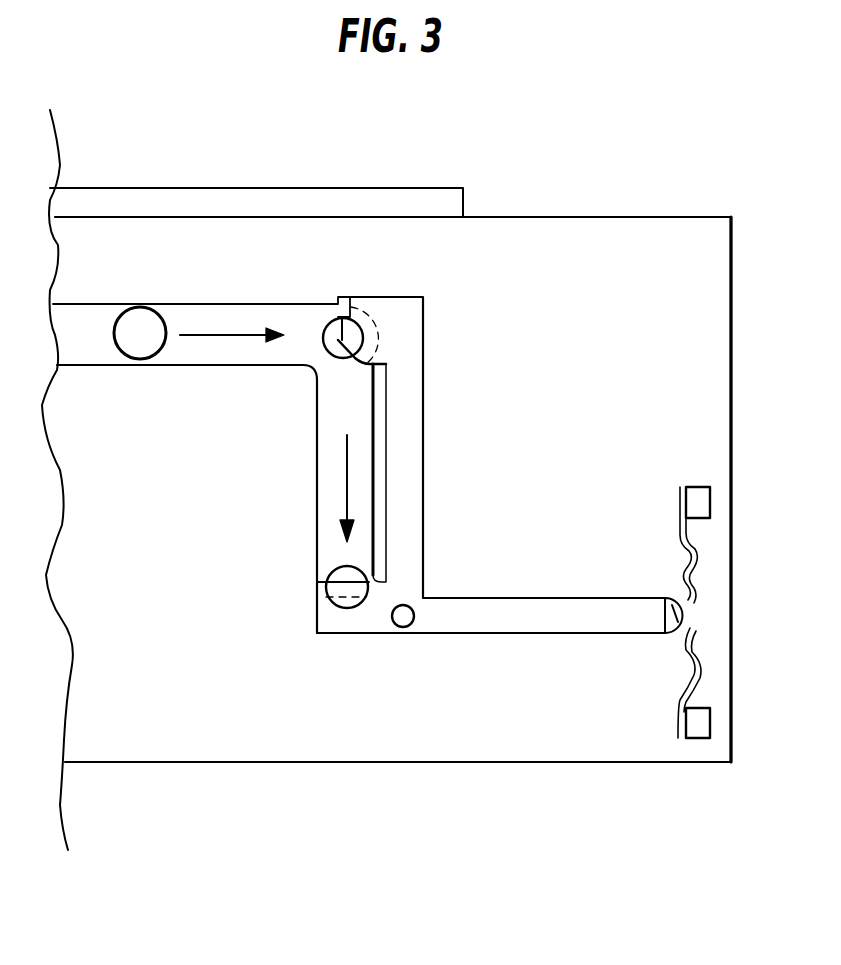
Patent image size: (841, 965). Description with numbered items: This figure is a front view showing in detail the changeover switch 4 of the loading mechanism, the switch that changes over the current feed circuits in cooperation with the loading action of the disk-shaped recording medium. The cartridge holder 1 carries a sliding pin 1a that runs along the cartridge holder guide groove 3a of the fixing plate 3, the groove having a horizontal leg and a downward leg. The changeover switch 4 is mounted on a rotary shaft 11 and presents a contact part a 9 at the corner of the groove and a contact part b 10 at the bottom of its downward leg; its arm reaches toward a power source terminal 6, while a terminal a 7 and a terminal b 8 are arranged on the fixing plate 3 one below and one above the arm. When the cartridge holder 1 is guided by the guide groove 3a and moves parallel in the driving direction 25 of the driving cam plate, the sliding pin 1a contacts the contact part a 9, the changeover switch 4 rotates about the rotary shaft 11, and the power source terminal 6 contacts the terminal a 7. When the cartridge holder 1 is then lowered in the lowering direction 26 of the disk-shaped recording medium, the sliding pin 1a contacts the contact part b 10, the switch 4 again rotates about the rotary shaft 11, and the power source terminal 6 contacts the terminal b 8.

The cartridge holder 1 is at (378, 200).
The sliding pin 1a is at (135, 340).
The fixing plate 3 is at (505, 252).
The cartridge holder guide groove 3a is at (330, 518).
The changeover switch 4 is at (462, 620).
The power source terminal 6 is at (672, 627).
The terminal a 7 is at (683, 727).
The terminal b 8 is at (686, 487).
The contact part a 9 is at (345, 323).
The contact part b 10 is at (333, 606).
The rotary shaft 11 is at (403, 616).
The driving direction 25 is at (216, 334).
The lowering direction 26 is at (345, 485).